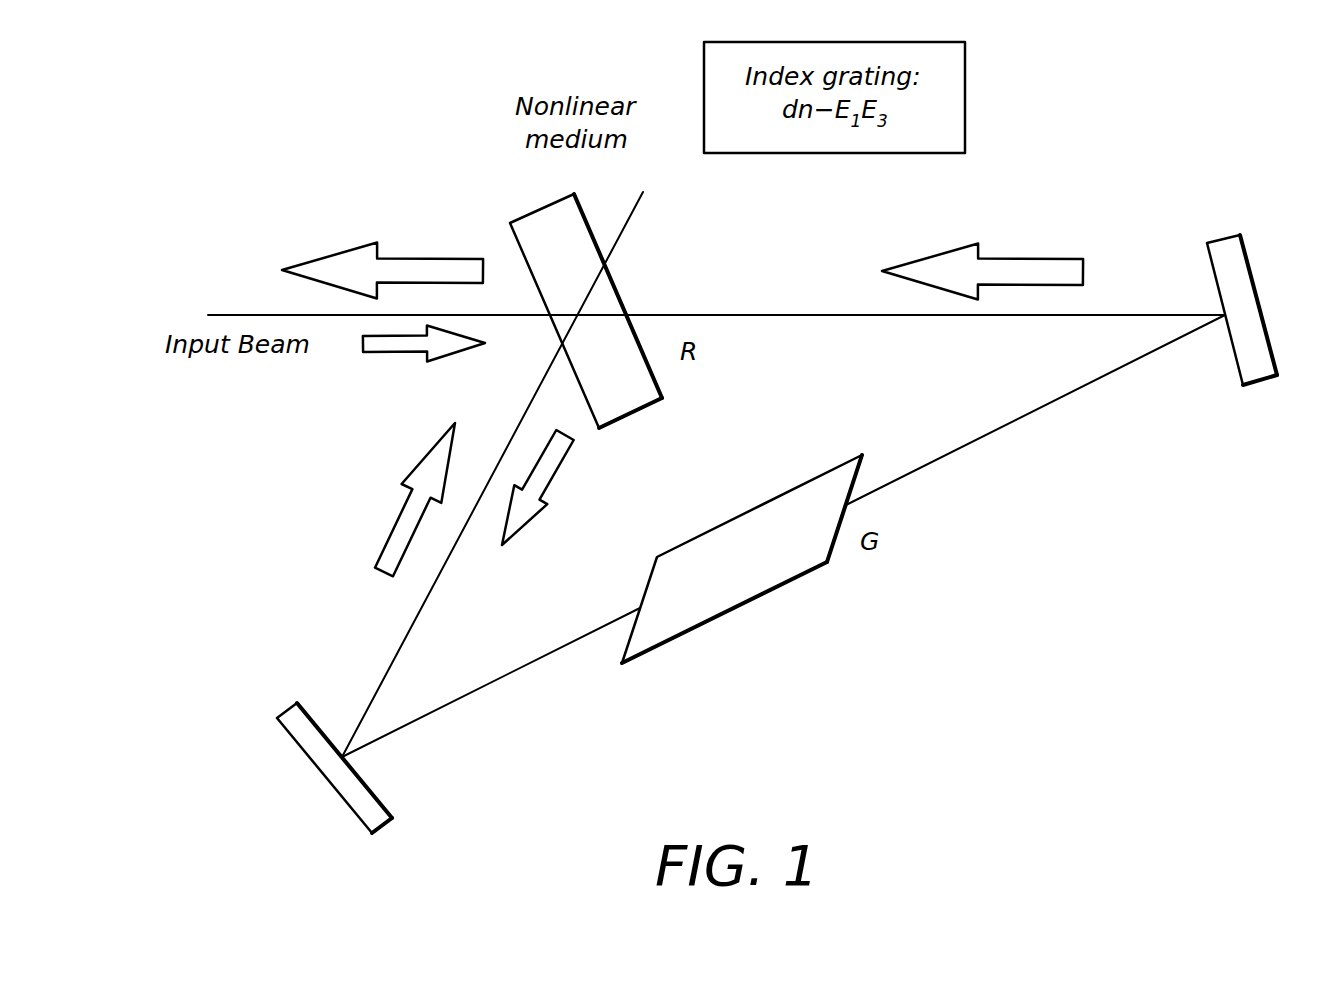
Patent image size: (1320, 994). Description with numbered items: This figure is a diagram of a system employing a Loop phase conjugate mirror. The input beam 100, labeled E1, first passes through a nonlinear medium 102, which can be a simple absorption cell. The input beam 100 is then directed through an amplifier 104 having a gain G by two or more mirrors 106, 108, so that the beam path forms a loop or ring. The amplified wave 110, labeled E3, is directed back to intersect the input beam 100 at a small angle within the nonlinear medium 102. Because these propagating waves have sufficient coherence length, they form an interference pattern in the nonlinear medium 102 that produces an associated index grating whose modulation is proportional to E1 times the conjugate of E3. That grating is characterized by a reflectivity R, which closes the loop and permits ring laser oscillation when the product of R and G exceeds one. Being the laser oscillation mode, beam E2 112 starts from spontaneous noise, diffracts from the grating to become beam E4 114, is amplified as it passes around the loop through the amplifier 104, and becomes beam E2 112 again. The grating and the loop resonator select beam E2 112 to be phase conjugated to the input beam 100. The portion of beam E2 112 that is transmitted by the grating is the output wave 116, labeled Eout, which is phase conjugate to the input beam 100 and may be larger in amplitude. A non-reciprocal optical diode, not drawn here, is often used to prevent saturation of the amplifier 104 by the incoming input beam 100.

The input beam 100 is at (400, 355).
The nonlinear medium 102 is at (540, 210).
The amplifier 104 is at (720, 613).
The mirror 106 is at (1255, 275).
The mirror 108 is at (378, 797).
The amplified wave 110 is at (383, 550).
The beam E2 112 is at (1012, 257).
The beam E4 114 is at (520, 528).
The output wave 116 is at (425, 258).